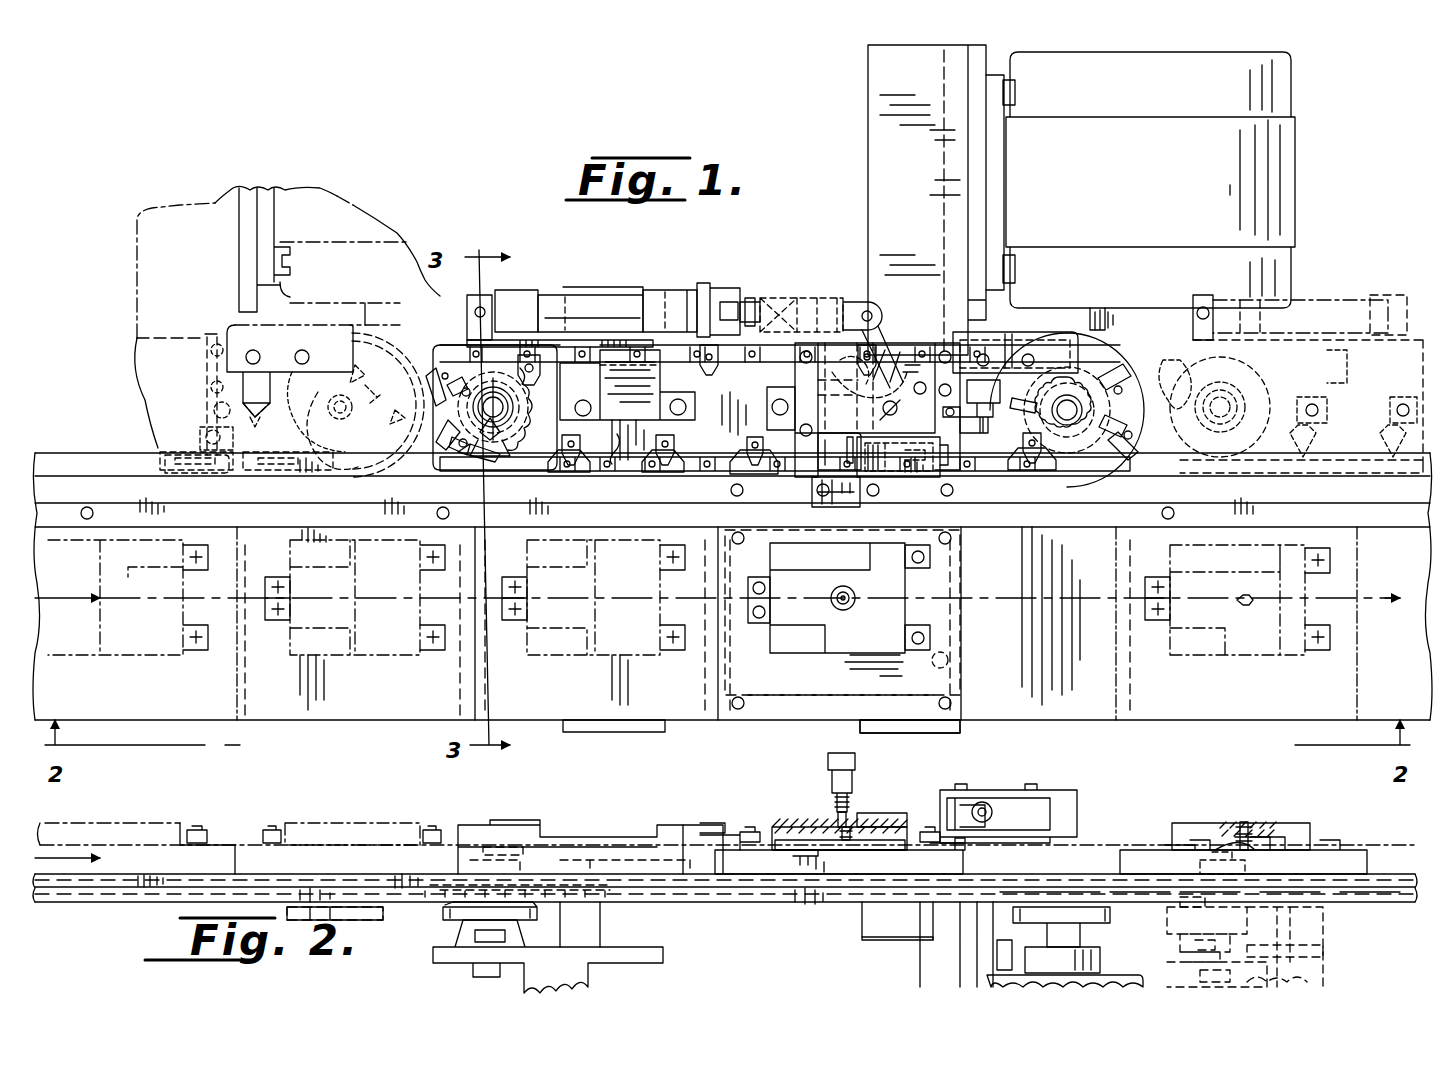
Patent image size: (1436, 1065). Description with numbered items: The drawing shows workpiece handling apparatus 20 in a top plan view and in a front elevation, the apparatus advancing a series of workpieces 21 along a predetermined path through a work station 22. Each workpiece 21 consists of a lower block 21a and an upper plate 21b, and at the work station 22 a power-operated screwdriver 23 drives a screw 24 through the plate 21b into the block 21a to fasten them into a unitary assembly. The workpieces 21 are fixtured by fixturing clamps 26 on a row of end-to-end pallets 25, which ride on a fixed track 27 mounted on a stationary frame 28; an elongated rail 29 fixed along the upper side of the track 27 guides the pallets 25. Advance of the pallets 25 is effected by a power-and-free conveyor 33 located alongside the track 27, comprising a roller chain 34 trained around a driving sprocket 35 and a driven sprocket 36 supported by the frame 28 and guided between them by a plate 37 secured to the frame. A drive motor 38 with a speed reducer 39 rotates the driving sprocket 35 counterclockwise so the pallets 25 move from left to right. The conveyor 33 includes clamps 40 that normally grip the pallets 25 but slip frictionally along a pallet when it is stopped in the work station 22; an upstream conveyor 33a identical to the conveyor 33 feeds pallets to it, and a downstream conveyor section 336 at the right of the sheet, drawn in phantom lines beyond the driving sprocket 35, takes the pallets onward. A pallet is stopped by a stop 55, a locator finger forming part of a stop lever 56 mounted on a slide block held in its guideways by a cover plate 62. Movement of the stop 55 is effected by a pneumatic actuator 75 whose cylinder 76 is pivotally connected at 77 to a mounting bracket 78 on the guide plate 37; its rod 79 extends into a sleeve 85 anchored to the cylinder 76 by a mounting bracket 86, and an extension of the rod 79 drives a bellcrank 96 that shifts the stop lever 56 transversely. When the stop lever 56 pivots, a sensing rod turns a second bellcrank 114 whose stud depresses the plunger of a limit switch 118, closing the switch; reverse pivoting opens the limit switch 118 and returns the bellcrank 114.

In FIG. 1, the apparatus 20 is at (540, 230).
In FIG. 1, the workpiece 21 is at (367, 645).
In FIG. 2, the workpiece 21 is at (383, 811).
In FIG. 2, the lower block 21a is at (863, 848).
In FIG. 2, the upper plate 21b is at (865, 818).
In FIG. 1, the work station 22 is at (818, 603).
In FIG. 2, the work station 22 is at (833, 805).
In FIG. 1, the power-operated screwdriver 23 is at (830, 593).
In FIG. 2, the power-operated screwdriver 23 is at (860, 774).
In FIG. 1, the screw 24 is at (1237, 598).
In FIG. 2, the screw 24 is at (1244, 820).
In FIG. 1, the pallet 25 is at (277, 722).
In FIG. 2, the pallet 25 is at (265, 838).
In FIG. 1, the fixturing clamp 26 is at (748, 596).
In FIG. 1, the track 27 is at (1010, 705).
In FIG. 2, the track 27 is at (750, 905).
In FIG. 2, the frame 28 is at (600, 947).
In FIG. 1, the rail 29 is at (325, 518).
In FIG. 1, the power-and-free conveyor 33 is at (590, 473).
In FIG. 2, the power-and-free conveyor 33 is at (875, 900).
In FIG. 1, the conveyor 33a is at (195, 472).
In FIG. 1, the roller chain 34 is at (620, 473).
In FIG. 1, the driving sprocket 35 is at (1080, 393).
In FIG. 2, the driving sprocket 35 is at (1108, 926).
In FIG. 1, the driven sprocket 36 is at (518, 386).
In FIG. 2, the driven sprocket 36 is at (450, 900).
In FIG. 1, the plate 37 is at (677, 405).
In FIG. 1, the drive motor 38 is at (1295, 198).
In FIG. 1, the speed reducer 39 is at (1125, 320).
In FIG. 2, the speed reducer 39 is at (1086, 957).
In FIG. 1, the clamp 40 is at (490, 450).
In FIG. 1, the stop 55 is at (853, 477).
In FIG. 1, the stop lever 56 is at (823, 470).
In FIG. 1, the cover plate 62 is at (795, 372).
In FIG. 1, the pneumatic actuator 75 is at (620, 290).
In FIG. 1, the cylinder 76 is at (555, 292).
In FIG. 1, the pivotal connection 77 is at (470, 298).
In FIG. 1, the mounting bracket 78 is at (475, 315).
In FIG. 1, the rod 79 is at (735, 315).
In FIG. 1, the sleeve 85 is at (810, 300).
In FIG. 1, the mounting bracket 86 is at (722, 287).
In FIG. 1, the bellcrank 96 is at (895, 340).
In FIG. 1, the bellcrank 114 is at (970, 463).
In FIG. 1, the limit switch 118 is at (1000, 360).
In FIG. 2, the limit switch 118 is at (1058, 792).
In FIG. 1, the chain section 336 is at (1305, 465).